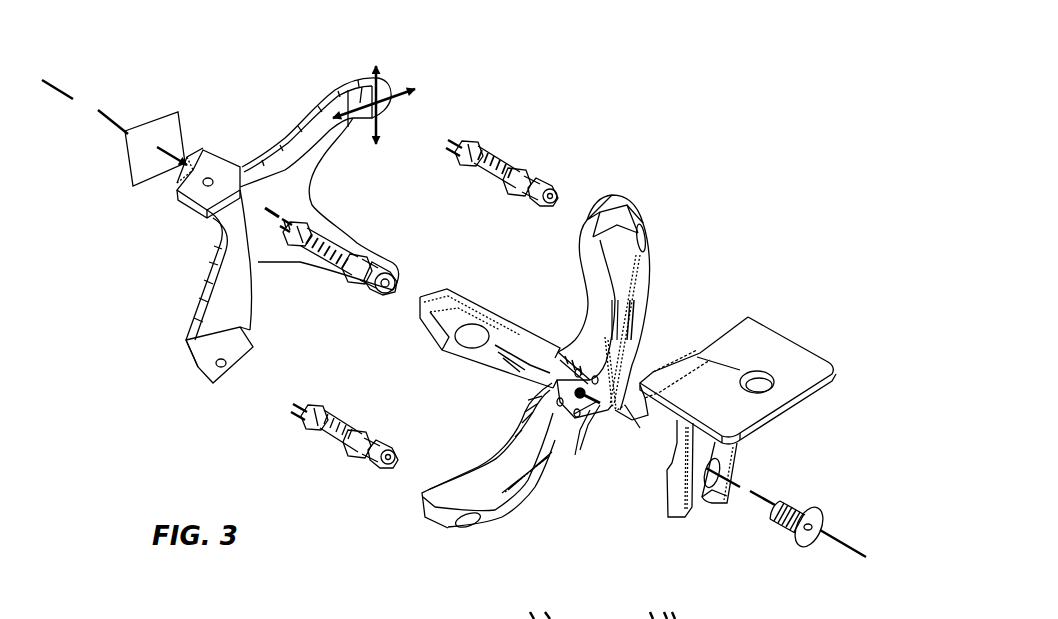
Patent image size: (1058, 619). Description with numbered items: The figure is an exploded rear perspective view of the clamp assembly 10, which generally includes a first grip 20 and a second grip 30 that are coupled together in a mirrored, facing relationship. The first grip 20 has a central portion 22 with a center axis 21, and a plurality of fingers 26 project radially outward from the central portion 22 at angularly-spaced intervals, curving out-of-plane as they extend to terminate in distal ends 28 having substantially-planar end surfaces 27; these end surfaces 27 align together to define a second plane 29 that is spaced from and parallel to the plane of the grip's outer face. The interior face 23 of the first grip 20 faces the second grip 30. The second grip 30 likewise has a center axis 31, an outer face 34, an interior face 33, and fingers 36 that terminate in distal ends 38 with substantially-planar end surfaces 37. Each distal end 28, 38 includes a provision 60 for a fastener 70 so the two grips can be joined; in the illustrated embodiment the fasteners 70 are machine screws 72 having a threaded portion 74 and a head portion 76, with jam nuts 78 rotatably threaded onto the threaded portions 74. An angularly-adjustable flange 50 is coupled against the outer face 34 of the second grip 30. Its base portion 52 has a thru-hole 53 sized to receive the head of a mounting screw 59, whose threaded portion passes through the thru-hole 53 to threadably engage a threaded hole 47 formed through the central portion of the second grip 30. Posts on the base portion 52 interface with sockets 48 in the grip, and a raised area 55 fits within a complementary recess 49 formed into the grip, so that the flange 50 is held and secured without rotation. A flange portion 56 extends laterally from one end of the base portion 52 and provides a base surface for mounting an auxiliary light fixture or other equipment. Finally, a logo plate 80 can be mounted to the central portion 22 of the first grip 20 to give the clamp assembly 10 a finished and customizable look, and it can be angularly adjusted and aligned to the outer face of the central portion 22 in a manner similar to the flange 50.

The clamp assembly 10 is at (731, 119).
The first grip 20 is at (264, 80).
The center axis 21 is at (56, 84).
The central portion 22 is at (203, 235).
The interior face 23 is at (344, 210).
The fingers 26 is at (186, 313).
The substantially-planar end surface 27 is at (242, 352).
The distal end 28 is at (194, 368).
The second plane 29 is at (382, 66).
The second grip 30 is at (746, 240).
The center axis 31 is at (856, 552).
The interior face 33 is at (557, 327).
The outer face 34 is at (598, 372).
The fingers 36 is at (509, 506).
The substantially-planar end surface 37 is at (407, 320).
The distal end 38 is at (430, 520).
The threaded hole 47 is at (578, 390).
The sockets 48 is at (578, 416).
The recess 49 is at (564, 428).
The angularly-adjustable flange 50 is at (847, 312).
The base portion 52 is at (695, 506).
The thru-hole 53 is at (720, 464).
The raised area 55 is at (676, 478).
The flange portion 56 is at (822, 386).
The mounting screw 59 is at (796, 545).
The provision for a fastener 60 is at (214, 180).
The fastener 70 is at (523, 128).
The machine screw 72 is at (482, 168).
The threaded portion 74 is at (310, 424).
The head portion 76 is at (372, 474).
The jam nuts 78 is at (358, 440).
The logo plate 80 is at (124, 158).